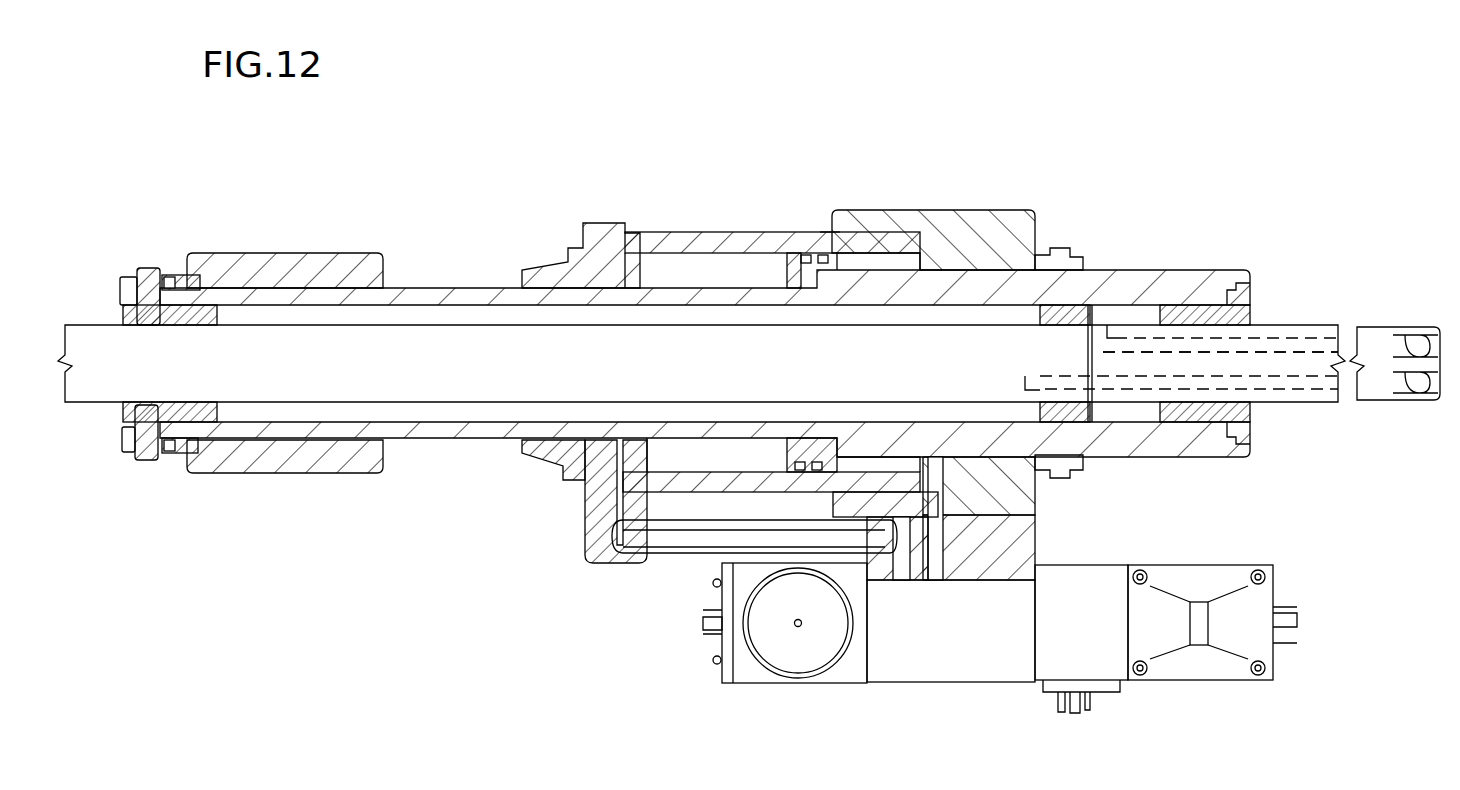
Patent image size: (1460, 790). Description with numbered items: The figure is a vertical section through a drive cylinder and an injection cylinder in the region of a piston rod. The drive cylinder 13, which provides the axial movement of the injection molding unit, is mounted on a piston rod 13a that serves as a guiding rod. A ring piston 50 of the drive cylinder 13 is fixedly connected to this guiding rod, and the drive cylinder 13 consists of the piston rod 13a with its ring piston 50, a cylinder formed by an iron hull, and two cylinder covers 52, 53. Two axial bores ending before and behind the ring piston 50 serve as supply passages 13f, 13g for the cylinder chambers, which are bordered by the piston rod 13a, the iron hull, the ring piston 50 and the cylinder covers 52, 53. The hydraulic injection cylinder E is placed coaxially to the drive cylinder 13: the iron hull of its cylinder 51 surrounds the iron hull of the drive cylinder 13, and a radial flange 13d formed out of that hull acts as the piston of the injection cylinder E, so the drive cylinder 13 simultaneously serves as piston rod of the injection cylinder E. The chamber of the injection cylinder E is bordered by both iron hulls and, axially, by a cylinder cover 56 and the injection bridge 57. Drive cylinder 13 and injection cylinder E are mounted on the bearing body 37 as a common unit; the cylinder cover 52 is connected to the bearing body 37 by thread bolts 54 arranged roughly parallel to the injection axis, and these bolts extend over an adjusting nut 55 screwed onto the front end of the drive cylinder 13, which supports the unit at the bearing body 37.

The drive cylinder 13 is at (453, 443).
The piston rod 13a is at (380, 384).
The radial flange 13d is at (793, 458).
The supply passage 13f is at (1363, 312).
The supply passage 13g is at (1288, 382).
The bearing body 37 is at (280, 268).
The ring piston 50 is at (1037, 400).
The cylinder 51 is at (758, 238).
The cylinder cover 52 is at (140, 268).
The cylinder cover 53 is at (1248, 310).
The thread bolt 54 is at (120, 282).
The adjusting nut 55 is at (178, 275).
The cylinder cover 56 is at (577, 247).
The injection bridge 57 is at (968, 227).
The injection cylinder E is at (806, 229).